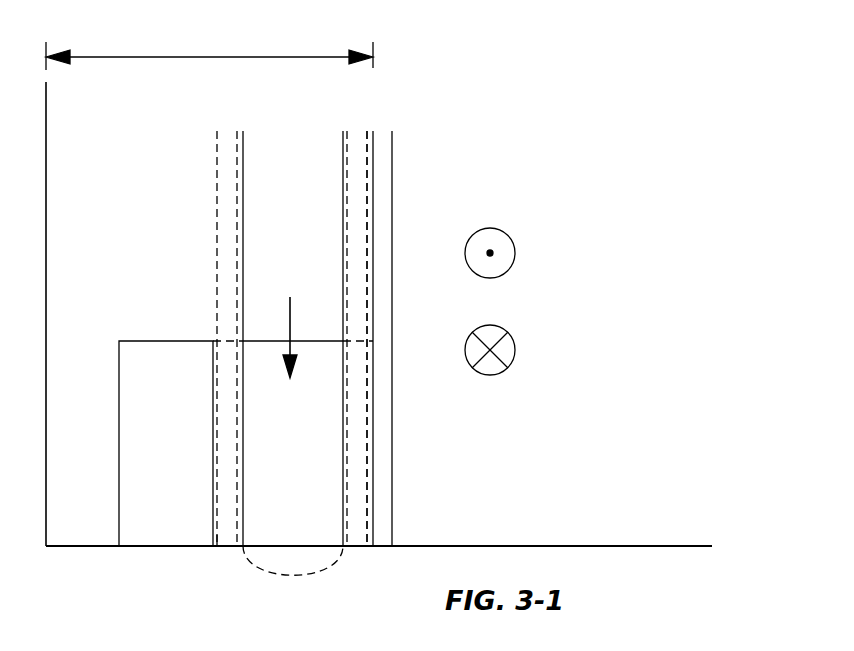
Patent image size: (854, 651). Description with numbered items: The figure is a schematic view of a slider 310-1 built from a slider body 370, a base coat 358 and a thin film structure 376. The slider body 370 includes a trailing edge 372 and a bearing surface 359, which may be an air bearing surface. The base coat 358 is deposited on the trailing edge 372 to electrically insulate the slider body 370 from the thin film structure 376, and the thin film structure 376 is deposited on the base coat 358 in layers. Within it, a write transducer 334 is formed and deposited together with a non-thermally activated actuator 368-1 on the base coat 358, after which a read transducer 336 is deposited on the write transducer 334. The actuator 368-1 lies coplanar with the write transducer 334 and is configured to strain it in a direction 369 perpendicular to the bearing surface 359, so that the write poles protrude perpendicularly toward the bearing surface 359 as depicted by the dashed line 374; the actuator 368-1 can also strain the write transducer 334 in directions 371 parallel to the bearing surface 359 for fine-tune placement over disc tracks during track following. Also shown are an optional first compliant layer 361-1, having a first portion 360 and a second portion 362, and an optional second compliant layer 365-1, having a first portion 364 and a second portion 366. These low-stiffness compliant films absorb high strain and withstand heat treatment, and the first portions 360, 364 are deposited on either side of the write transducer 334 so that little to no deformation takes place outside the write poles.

The slider 310-1 is at (583, 89).
The write transducer 334 is at (322, 458).
The read transducer 336 is at (187, 458).
The base coat 358 is at (380, 197).
The bearing surface 359 is at (688, 547).
The first portion 360 is at (356, 442).
The first compliant layer 361-1 is at (347, 175).
The second portion 362 is at (353, 152).
The first portion 364 is at (226, 535).
The second compliant layer 365-1 is at (217, 150).
The second portion 366 is at (228, 213).
The non-thermally activated actuator 368-1 is at (333, 259).
The direction 369 is at (290, 308).
The slider body 370 is at (614, 326).
The directions 371 is at (510, 335).
The trailing edge 372 is at (392, 511).
The dashed line 374 is at (292, 575).
The thin film structure 376 is at (278, 57).